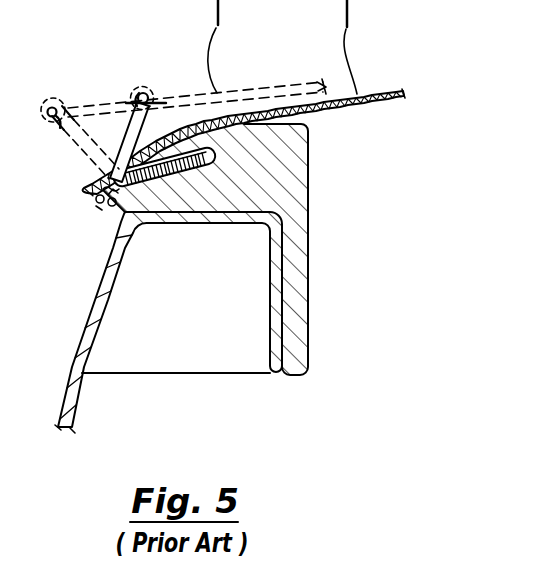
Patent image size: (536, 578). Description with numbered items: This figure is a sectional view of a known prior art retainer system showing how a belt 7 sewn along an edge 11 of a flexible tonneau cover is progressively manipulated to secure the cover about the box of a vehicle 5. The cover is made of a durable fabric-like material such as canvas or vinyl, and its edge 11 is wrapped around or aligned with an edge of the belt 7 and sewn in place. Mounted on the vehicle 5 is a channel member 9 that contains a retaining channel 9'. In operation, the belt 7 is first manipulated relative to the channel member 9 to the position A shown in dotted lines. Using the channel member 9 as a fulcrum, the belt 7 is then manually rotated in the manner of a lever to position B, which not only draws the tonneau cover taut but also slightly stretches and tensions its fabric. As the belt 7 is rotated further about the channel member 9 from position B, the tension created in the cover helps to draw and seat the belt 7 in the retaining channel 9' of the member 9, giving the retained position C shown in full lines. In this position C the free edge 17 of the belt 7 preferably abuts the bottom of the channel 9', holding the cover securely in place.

The vehicle 5 is at (170, 350).
The belt 7 is at (124, 135).
The channel member 9 is at (252, 249).
The retaining channel 9' is at (168, 310).
The edge of the tonneau cover 11 is at (68, 196).
The free edge of the belt 17 is at (206, 165).
The position A is at (163, 102).
The position B is at (77, 140).
The position C is at (92, 206).